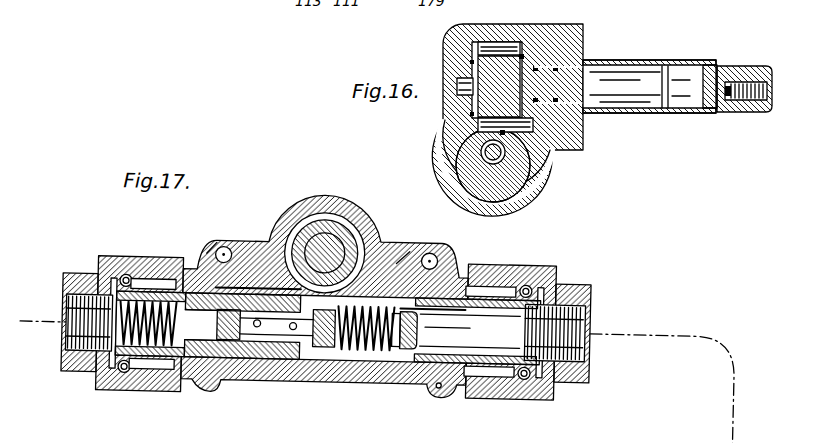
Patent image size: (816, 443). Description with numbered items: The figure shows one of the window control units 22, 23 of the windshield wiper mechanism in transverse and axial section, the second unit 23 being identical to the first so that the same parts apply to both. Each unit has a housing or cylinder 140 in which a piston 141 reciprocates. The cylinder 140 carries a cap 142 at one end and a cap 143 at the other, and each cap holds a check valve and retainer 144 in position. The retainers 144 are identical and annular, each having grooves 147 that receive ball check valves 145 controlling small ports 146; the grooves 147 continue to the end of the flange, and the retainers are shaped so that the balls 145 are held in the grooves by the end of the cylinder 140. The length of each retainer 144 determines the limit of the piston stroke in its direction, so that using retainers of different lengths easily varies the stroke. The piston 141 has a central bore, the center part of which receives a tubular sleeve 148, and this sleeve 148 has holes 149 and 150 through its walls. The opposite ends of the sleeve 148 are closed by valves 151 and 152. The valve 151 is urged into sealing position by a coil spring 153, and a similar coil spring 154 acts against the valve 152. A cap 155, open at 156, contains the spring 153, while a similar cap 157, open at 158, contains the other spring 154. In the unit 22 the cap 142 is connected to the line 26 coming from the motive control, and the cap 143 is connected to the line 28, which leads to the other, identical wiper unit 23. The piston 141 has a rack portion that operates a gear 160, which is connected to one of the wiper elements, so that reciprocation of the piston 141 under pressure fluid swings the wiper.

In FIG. 16, the window control unit 22 is at (690, 45).
In FIG. 17, the window control unit 22 is at (608, 262).
In FIG. 16, the window control unit 23 is at (722, 29).
In FIG. 17, the tube 26 is at (40, 326).
In FIG. 17, the tube 28 is at (641, 328).
In FIG. 16, the housing or cylinder 140 is at (447, 171).
In FIG. 17, the housing or cylinder 140 is at (312, 380).
In FIG. 16, the piston 141 is at (527, 163).
In FIG. 17, the piston 141 is at (256, 362).
In FIG. 16, the cap 142 is at (540, 190).
In FIG. 17, the cap 142 is at (126, 396).
In FIG. 17, the cap 143 is at (557, 396).
In FIG. 17, the check valve and retainer 144 is at (125, 280).
In FIG. 17, the ball check valve 145 is at (116, 372).
In FIG. 17, the small port 146 is at (112, 366).
In FIG. 17, the groove 147 is at (160, 288).
In FIG. 17, the tubular sleeve 148 is at (288, 342).
In FIG. 17, the hole 149 is at (253, 292).
In FIG. 17, the hole 150 is at (302, 382).
In FIG. 17, the valve 151 is at (233, 346).
In FIG. 16, the valve 152 is at (482, 152).
In FIG. 17, the valve 152 is at (320, 352).
In FIG. 17, the coil spring 153 is at (186, 270).
In FIG. 17, the coil spring 154 is at (403, 352).
In FIG. 17, the cap 155 is at (140, 340).
In FIG. 17, the opening 156 is at (137, 330).
In FIG. 17, the cap 157 is at (416, 349).
In FIG. 17, the opening 158 is at (414, 327).
In FIG. 16, the gear 160 is at (505, 47).
In FIG. 17, the gear 160 is at (328, 235).